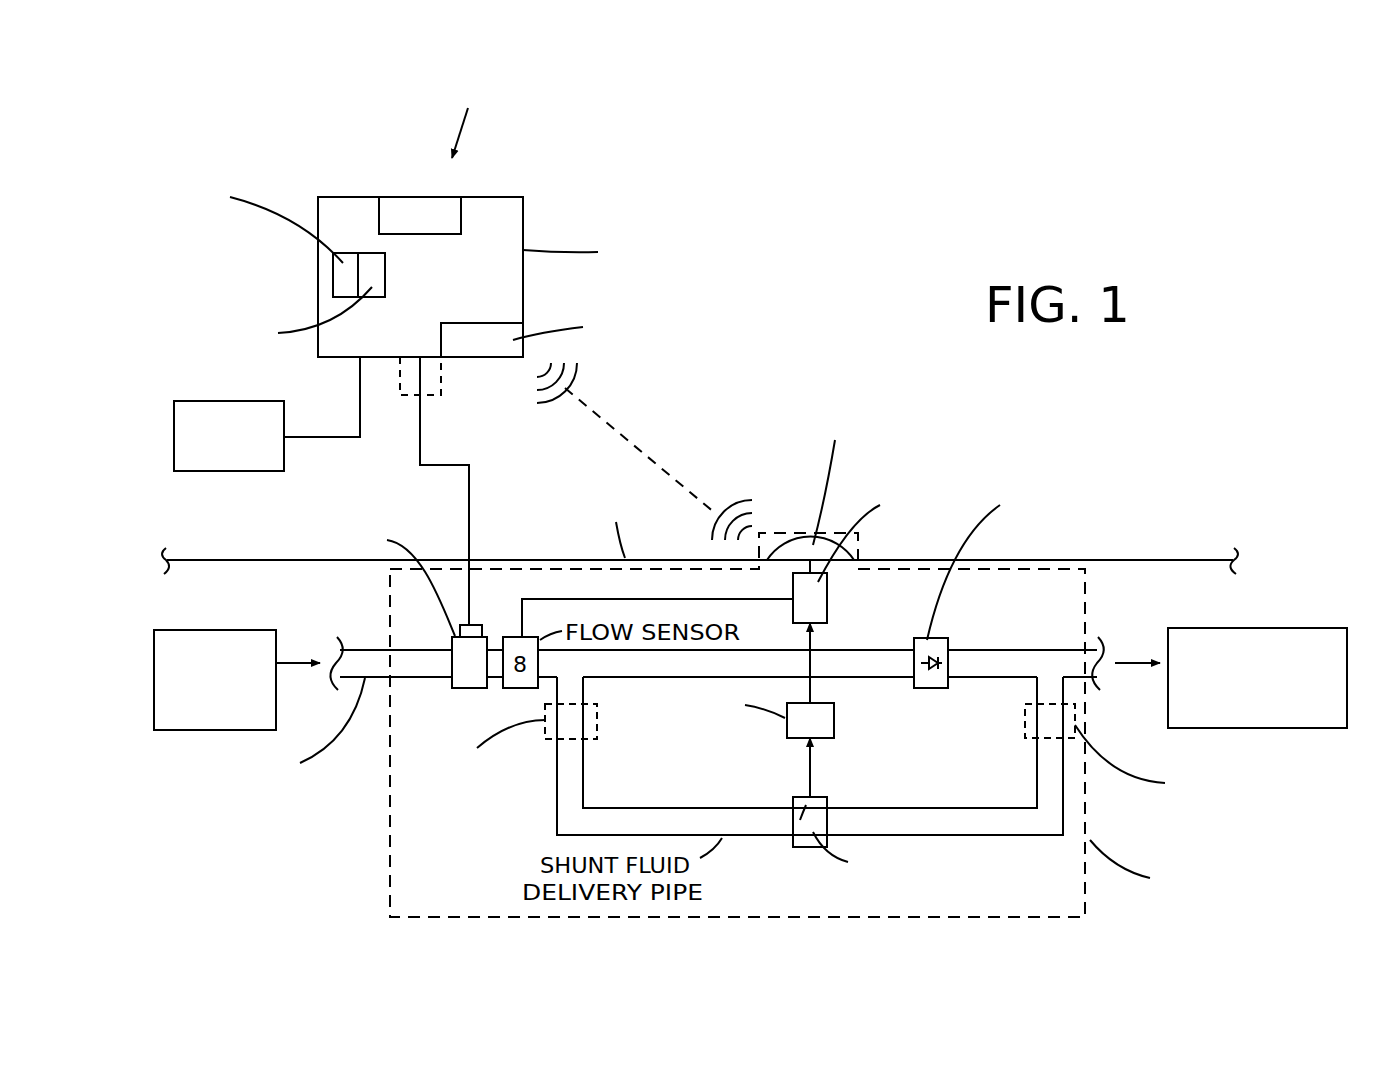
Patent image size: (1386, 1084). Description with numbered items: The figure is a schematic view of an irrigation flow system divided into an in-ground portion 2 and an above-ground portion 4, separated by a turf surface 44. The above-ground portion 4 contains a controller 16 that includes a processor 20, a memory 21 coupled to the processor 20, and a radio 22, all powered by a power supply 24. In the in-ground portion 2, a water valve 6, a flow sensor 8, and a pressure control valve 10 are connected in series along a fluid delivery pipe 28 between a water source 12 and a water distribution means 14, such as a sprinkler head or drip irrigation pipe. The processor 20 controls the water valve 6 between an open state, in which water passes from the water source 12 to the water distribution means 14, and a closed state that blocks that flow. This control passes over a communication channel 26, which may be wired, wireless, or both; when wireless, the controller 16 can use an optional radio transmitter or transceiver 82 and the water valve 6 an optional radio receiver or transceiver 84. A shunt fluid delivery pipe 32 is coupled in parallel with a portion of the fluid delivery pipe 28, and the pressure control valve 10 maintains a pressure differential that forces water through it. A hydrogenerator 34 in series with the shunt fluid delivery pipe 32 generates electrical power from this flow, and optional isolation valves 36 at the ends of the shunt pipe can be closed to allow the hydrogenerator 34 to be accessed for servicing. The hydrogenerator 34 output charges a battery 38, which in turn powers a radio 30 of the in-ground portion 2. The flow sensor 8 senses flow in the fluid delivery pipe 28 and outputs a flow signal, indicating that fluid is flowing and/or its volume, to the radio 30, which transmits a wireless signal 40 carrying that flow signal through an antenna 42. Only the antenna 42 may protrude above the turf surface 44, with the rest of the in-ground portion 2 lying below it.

The in-ground portion 2 is at (388, 845).
The above-ground portion 4 is at (605, 172).
The water valve 6 is at (351, 609).
The flow sensor 8 is at (393, 206).
The pressure control valve 10 is at (937, 645).
The water source 12 is at (232, 630).
The water distribution means 14 is at (1222, 627).
The controller 16 is at (523, 215).
The processor 20 is at (343, 280).
The memory 21 is at (377, 277).
The radio 22 is at (490, 340).
The power supply 24 is at (232, 475).
The communication channel 26 is at (438, 468).
The fluid delivery pipe 28 is at (366, 641).
The radio 30 is at (815, 603).
The shunt fluid delivery pipe 32 is at (820, 803).
The hydrogenerator 34 is at (800, 820).
The isolation valves 36 is at (597, 735).
The battery 38 is at (825, 726).
The wireless signal 40 is at (603, 418).
The antenna 42 is at (793, 545).
The turf surface 44 is at (1170, 558).
The radio transmitter or transceiver 82 is at (415, 396).
The radio receiver or transceiver 84 is at (472, 625).